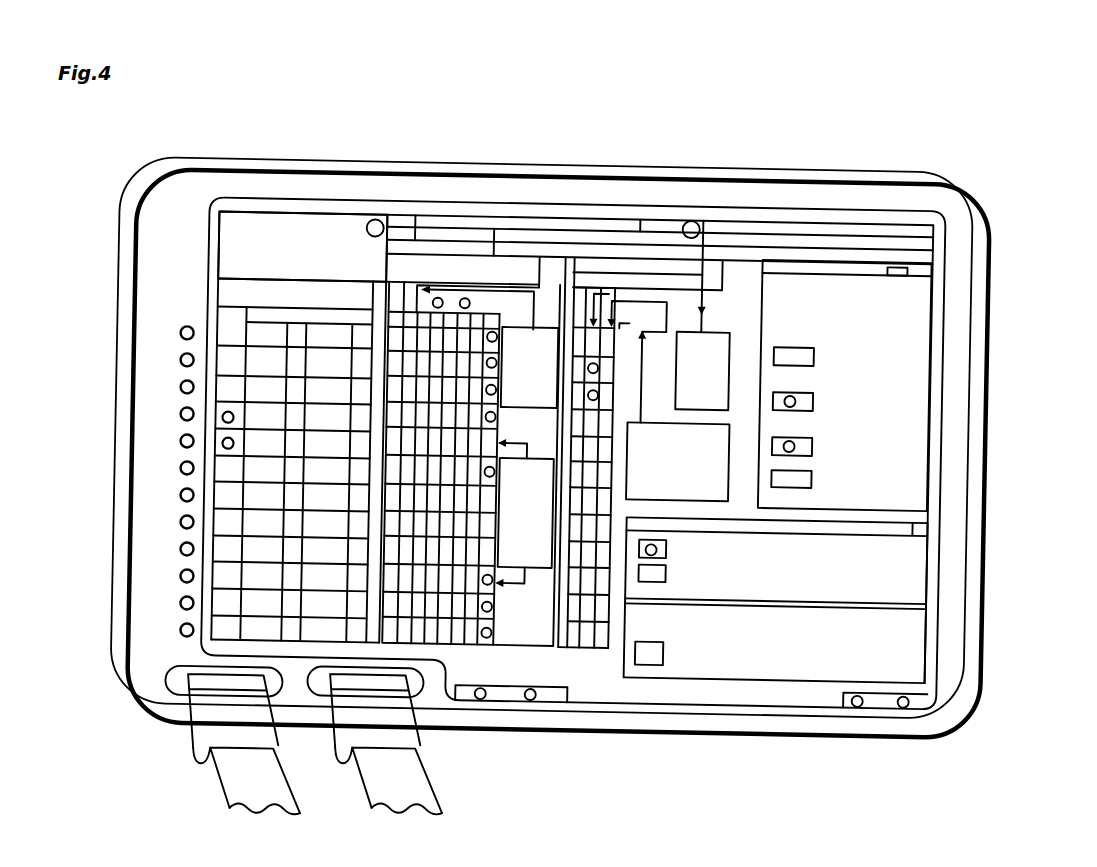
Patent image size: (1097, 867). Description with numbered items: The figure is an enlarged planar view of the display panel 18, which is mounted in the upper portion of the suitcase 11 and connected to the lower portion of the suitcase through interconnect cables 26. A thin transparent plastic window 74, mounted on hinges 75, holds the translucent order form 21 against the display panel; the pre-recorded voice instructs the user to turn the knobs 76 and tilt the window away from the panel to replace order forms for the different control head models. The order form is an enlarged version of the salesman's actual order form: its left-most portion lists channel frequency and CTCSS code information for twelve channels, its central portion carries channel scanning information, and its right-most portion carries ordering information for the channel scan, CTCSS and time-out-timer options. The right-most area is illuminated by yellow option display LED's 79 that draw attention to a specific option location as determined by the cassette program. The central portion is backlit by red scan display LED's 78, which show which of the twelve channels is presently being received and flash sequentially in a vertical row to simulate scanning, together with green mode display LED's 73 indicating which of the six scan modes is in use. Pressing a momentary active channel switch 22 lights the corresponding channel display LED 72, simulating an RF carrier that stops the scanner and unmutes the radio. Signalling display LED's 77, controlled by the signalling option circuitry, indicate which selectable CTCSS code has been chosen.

The suitcase 11 is at (985, 250).
The display panel 18 is at (174, 200).
The translucent order form 21 is at (265, 228).
The momentary active channel switch 22 is at (180, 447).
The interconnect cables 26 is at (234, 774).
The channel display LED 72 is at (223, 445).
The green mode display LED's 73 is at (463, 299).
The thin transparent plastic window 74 is at (598, 677).
The hinges 75 is at (560, 697).
The knobs 76 is at (374, 221).
The signalling display LED's 77 is at (600, 395).
The red scan display LED's 78 is at (492, 332).
The yellow option display LED's 79 is at (795, 438).